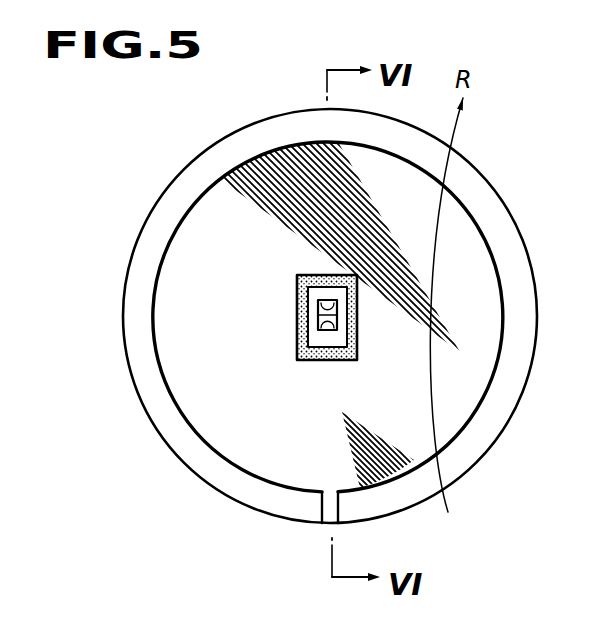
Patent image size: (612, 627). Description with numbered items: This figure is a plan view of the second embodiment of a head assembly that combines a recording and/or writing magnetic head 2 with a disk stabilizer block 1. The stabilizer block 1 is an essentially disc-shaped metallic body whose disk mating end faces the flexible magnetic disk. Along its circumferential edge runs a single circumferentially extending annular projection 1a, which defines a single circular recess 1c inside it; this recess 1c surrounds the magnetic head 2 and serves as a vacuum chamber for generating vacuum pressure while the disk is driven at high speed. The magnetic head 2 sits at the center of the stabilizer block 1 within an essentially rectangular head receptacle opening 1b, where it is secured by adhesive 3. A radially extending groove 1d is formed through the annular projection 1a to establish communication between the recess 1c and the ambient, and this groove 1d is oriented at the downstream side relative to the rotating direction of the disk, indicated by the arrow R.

The stabilizer block 1 is at (367, 333).
The annular projection 1a is at (483, 200).
The head receptacle opening 1b is at (300, 339).
The circular recess 1c is at (485, 289).
The radially extending groove 1d is at (410, 507).
The magnetic head 2 is at (333, 322).
The adhesive 3 is at (300, 297).